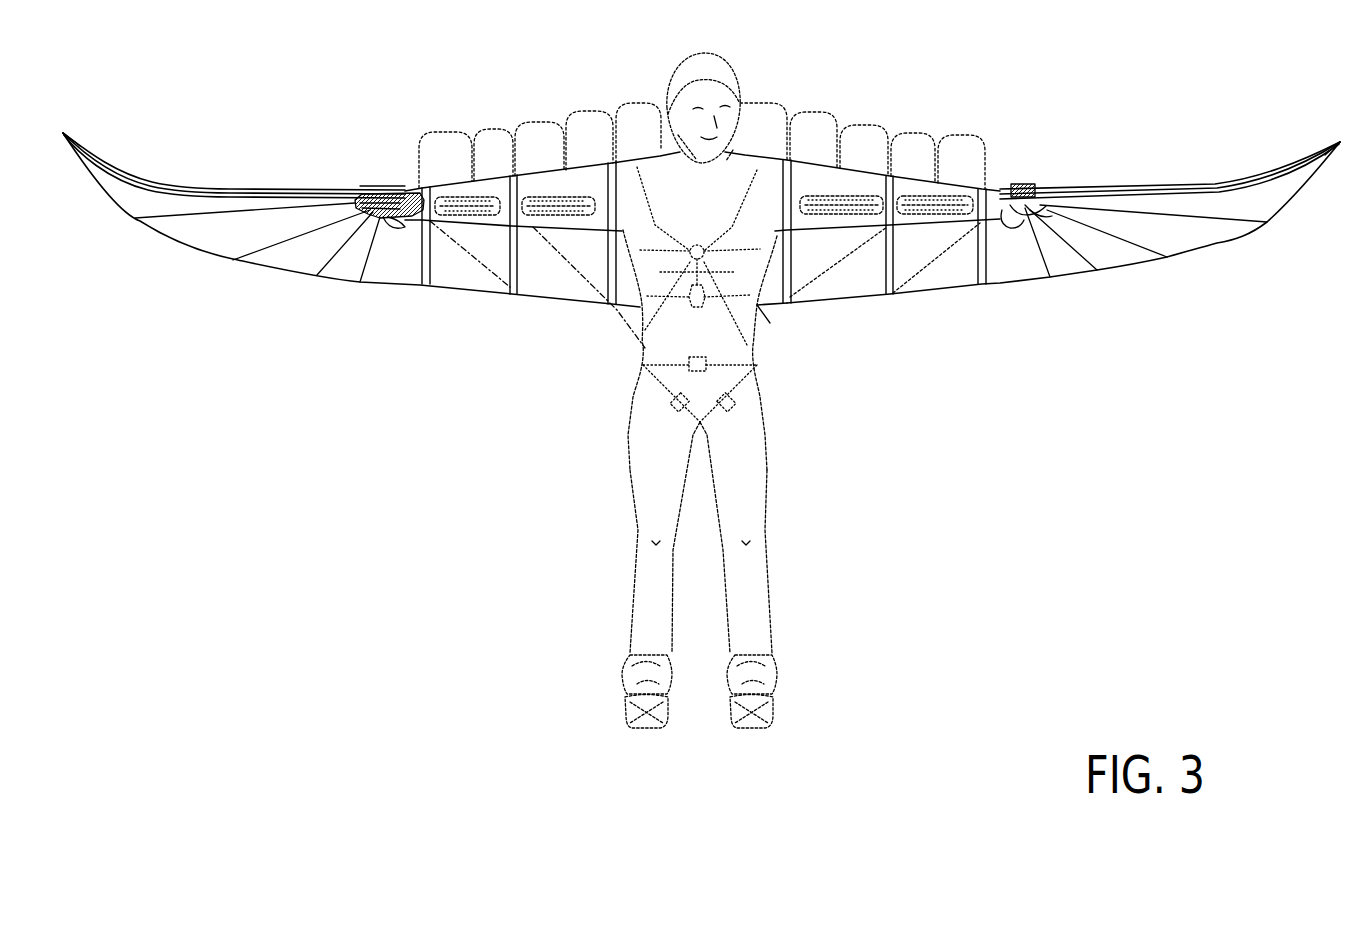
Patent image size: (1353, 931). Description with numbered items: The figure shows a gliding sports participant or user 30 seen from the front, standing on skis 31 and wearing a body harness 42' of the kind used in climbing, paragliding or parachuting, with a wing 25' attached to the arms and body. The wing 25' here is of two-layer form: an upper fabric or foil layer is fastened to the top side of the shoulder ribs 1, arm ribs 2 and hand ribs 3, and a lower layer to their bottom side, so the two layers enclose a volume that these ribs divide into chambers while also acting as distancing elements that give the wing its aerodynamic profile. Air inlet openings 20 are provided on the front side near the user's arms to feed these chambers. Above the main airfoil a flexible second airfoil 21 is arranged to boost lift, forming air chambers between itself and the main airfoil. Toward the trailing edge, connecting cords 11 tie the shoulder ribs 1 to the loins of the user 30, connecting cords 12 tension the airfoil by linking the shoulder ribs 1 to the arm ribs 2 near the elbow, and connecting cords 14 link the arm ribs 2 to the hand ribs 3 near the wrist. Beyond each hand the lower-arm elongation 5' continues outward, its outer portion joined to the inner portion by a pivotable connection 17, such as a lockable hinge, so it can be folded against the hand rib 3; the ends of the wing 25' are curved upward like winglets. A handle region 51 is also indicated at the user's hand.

The shoulder ribs 1 is at (793, 156).
The arm ribs 2 is at (893, 178).
The hand ribs 3 is at (984, 190).
The lower-arm elongation 5' is at (701, 158).
The connecting cords 11 is at (770, 323).
The connecting cords 12 is at (820, 257).
The connecting cords 14 is at (927, 260).
The pivotable connection 17 is at (1031, 187).
The air inlet openings 20 is at (838, 193).
The second airfoil 21 is at (762, 104).
The wing 25' is at (358, 139).
The gliding sports participant or user 30 is at (795, 436).
The skis 31 is at (640, 712).
The body harness 42' is at (644, 325).
The control handle 51 is at (406, 192).